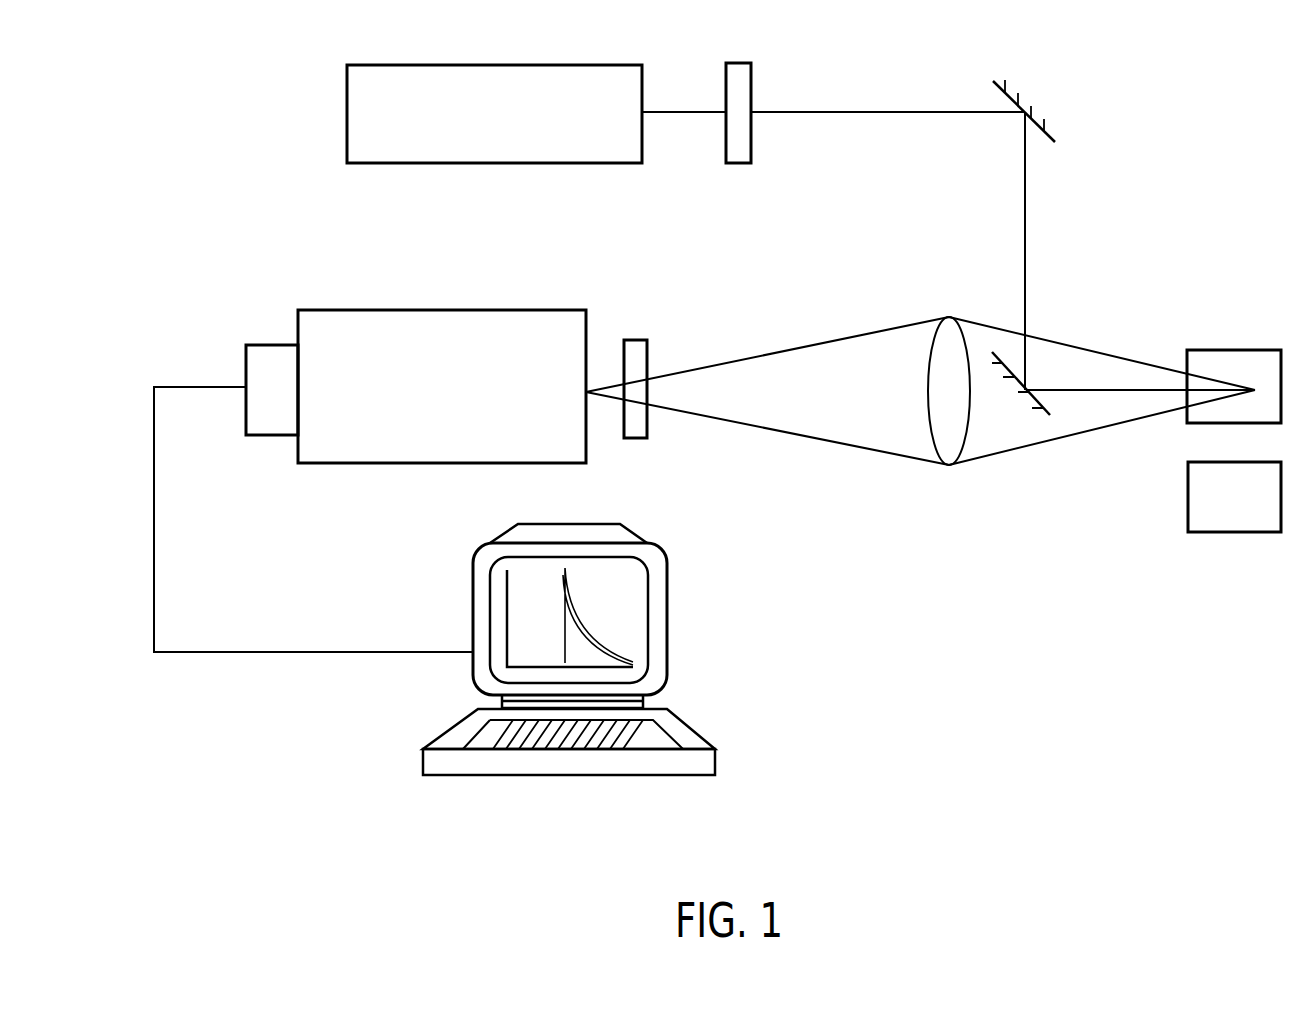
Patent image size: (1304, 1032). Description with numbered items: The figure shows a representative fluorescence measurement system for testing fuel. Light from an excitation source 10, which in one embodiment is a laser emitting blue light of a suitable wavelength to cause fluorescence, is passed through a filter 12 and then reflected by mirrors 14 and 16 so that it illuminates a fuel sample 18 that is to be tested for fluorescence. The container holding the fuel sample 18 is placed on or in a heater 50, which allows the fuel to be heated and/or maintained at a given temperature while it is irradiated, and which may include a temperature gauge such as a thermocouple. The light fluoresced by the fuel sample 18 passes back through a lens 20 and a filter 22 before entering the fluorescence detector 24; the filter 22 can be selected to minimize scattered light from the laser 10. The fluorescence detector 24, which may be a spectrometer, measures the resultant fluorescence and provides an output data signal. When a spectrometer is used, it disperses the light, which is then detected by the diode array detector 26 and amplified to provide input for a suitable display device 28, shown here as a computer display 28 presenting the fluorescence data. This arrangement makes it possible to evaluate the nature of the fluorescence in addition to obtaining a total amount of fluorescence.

The excitation source 10 is at (408, 65).
The filter 12 is at (751, 97).
The mirror 14 is at (1022, 117).
The mirror 16 is at (1030, 388).
The fuel sample 18 is at (1229, 350).
The lens 20 is at (929, 407).
The filter 22 is at (632, 440).
The fluorescence detector 24 is at (362, 310).
The diode array detector 26 is at (260, 436).
The display device 28 is at (473, 598).
The heater 50 is at (1248, 509).